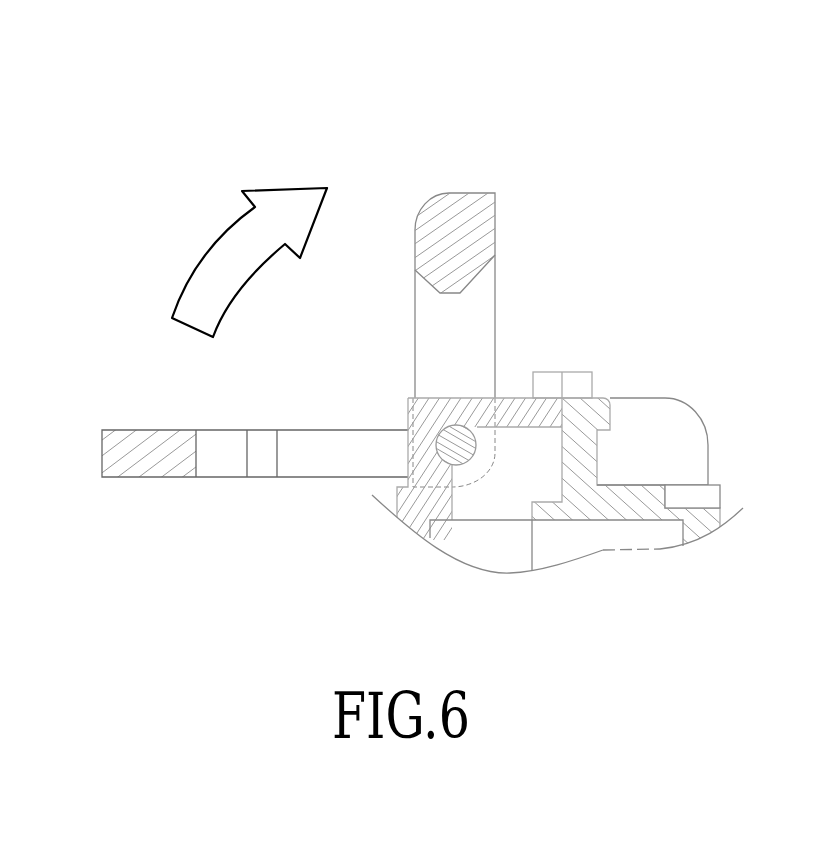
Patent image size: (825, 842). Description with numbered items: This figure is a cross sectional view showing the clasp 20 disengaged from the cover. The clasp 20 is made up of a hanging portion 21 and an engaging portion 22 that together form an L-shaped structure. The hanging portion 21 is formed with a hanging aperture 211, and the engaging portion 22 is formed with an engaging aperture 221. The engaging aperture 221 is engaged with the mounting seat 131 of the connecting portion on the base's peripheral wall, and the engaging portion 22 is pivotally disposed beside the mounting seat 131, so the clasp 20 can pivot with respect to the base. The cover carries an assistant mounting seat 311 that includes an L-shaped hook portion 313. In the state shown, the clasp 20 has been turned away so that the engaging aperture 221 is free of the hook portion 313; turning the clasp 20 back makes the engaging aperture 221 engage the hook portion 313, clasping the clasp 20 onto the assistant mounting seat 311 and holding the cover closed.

The clasp 20 is at (456, 299).
The engaging portion 22 is at (473, 247).
The engaging aperture 221 is at (485, 336).
The mounting seat 131 is at (518, 407).
The hook portion 313 is at (605, 417).
The assistant mounting seat 311 is at (590, 458).
The hanging portion 21 is at (225, 472).
The hanging aperture 211 is at (220, 463).